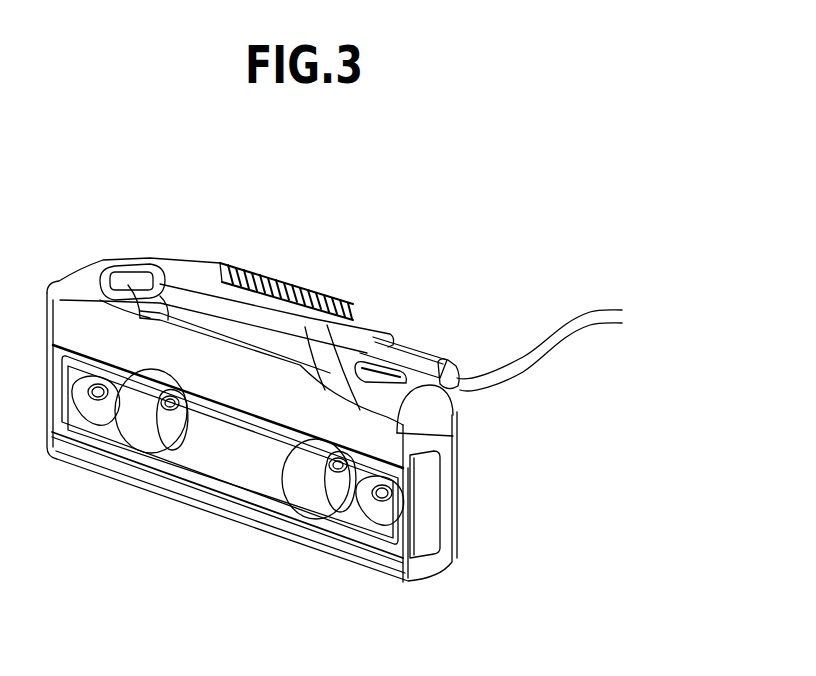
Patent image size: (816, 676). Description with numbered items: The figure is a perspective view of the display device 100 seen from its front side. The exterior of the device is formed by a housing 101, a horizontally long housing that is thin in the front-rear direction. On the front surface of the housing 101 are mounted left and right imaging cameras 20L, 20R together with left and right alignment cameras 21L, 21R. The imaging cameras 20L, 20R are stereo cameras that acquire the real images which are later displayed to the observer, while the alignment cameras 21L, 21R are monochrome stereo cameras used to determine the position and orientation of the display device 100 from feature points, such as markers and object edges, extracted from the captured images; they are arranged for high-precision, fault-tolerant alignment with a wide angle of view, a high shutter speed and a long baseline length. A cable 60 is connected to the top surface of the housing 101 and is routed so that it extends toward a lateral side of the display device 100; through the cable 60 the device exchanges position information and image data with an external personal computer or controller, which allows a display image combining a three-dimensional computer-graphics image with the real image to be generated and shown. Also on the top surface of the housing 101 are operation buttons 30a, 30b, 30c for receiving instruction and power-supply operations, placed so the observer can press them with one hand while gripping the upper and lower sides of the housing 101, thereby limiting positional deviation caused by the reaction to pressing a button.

The display device 100 is at (312, 258).
The housing 101 is at (470, 523).
The right imaging camera 20R is at (152, 452).
The left imaging camera 20L is at (328, 512).
The right alignment camera 21R is at (86, 424).
The left alignment camera 21L is at (377, 528).
The operation button 30a is at (128, 268).
The operation button 30b is at (100, 268).
The operation button 30c is at (455, 428).
The cable 60 is at (416, 354).